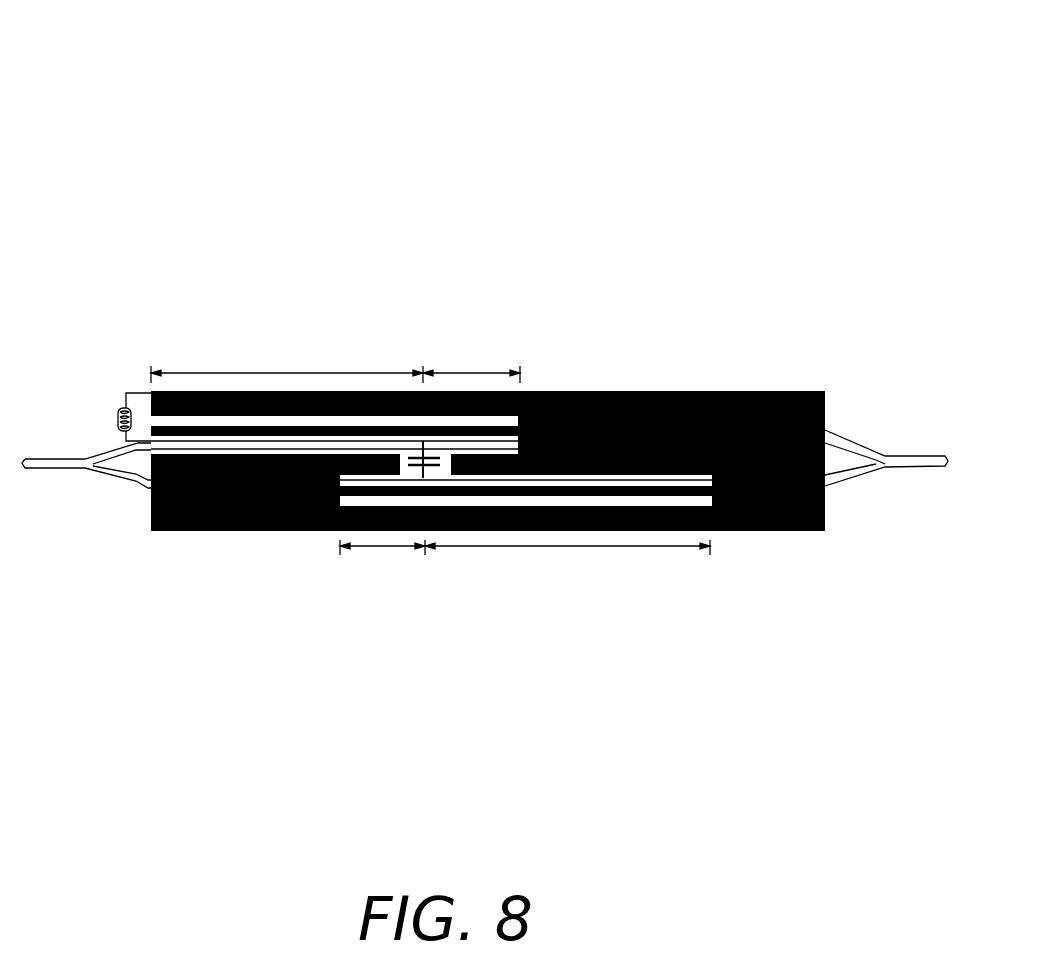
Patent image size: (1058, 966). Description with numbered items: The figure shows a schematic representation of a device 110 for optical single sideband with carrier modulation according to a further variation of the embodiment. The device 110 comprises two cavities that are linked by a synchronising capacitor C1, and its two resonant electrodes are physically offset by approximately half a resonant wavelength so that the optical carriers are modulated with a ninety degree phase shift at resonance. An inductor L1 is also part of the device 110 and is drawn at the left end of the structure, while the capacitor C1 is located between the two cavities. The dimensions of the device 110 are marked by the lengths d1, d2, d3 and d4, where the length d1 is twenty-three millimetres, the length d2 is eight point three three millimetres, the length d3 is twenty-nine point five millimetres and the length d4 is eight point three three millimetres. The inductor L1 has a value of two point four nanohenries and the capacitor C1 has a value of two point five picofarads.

The device 110 is at (485, 310).
The inductor L1 is at (112, 417).
The capacitor C1 is at (439, 443).
The length d1 is at (287, 356).
The length d2 is at (471, 356).
The length d3 is at (382, 568).
The length d4 is at (567, 568).